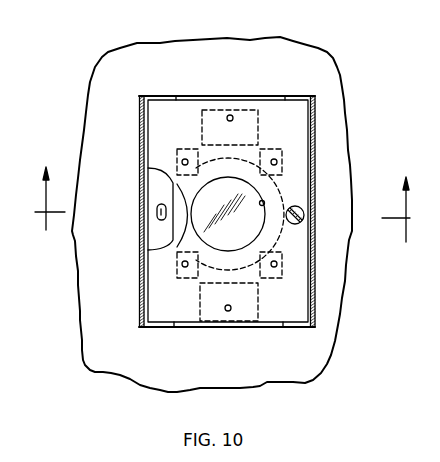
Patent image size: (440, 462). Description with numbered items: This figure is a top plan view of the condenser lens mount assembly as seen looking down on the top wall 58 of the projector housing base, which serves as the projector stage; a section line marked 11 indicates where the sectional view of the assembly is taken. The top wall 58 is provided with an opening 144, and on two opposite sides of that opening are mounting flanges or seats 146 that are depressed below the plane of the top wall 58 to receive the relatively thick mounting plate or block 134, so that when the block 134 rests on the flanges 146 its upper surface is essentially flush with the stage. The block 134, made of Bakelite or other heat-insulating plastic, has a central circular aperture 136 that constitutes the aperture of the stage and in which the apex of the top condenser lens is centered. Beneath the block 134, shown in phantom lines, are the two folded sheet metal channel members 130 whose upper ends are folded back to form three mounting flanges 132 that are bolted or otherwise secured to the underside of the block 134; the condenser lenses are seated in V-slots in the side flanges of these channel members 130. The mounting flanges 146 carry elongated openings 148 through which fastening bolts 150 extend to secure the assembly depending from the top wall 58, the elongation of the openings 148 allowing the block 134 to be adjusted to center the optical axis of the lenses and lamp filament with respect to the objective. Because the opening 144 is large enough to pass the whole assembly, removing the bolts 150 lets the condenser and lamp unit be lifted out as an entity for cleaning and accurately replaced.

The top wall of the housing base 58 is at (318, 53).
The opening 144 is at (201, 96).
The mounting plate or block 134 is at (184, 323).
The channel members 130 is at (196, 285).
The mounting flanges 132 is at (196, 148).
The aperture of mounting block 136 is at (264, 202).
The mounting flanges or seats 146 is at (148, 232).
The elongated openings 148 is at (156, 210).
The fastening bolts 150 is at (299, 224).
The section line 11- 11 is at (226, 204).